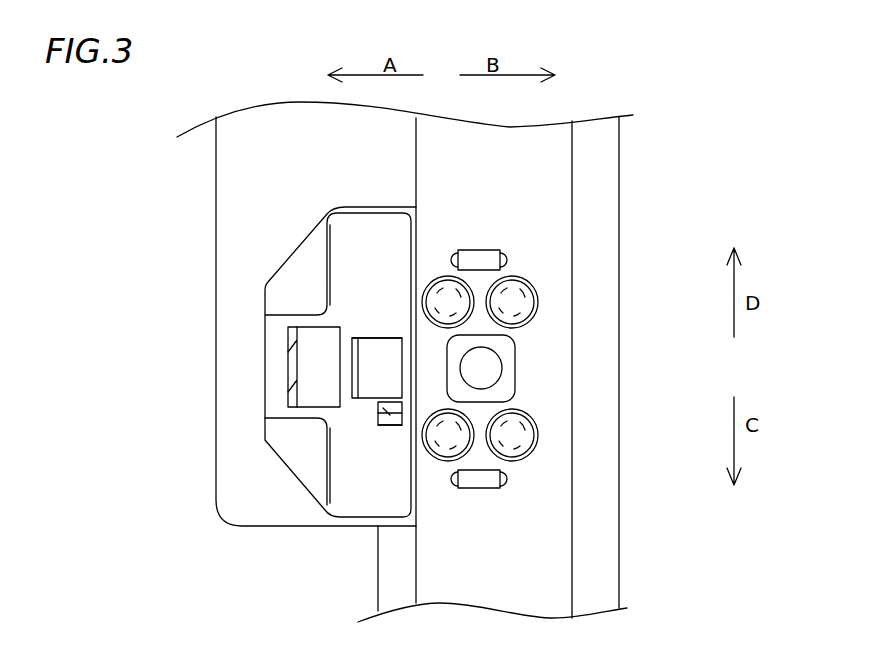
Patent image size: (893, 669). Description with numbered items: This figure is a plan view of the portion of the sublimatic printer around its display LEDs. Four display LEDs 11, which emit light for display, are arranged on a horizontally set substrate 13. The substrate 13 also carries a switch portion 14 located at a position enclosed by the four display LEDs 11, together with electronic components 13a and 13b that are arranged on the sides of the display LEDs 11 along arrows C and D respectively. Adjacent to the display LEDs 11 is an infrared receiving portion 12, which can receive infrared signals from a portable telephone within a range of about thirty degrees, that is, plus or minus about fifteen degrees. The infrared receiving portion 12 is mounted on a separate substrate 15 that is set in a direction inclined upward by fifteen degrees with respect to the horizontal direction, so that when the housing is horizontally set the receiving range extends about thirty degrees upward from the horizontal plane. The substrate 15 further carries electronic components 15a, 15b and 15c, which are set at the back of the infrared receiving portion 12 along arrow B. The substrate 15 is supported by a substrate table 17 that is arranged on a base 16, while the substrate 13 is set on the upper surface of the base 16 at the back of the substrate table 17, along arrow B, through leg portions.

The display LEDs 11 is at (450, 297).
The infrared receiving portion 12 is at (310, 338).
The substrate 13 is at (543, 502).
The electronic component 13a is at (480, 478).
The electronic component 13b is at (485, 257).
The switch portion 14 is at (481, 368).
The substrate 15 is at (347, 310).
The electronic component 15a is at (375, 375).
The electronic component 15b is at (393, 413).
The electronic component 15c is at (395, 426).
The base 16 is at (253, 212).
The substrate table 17 is at (303, 262).